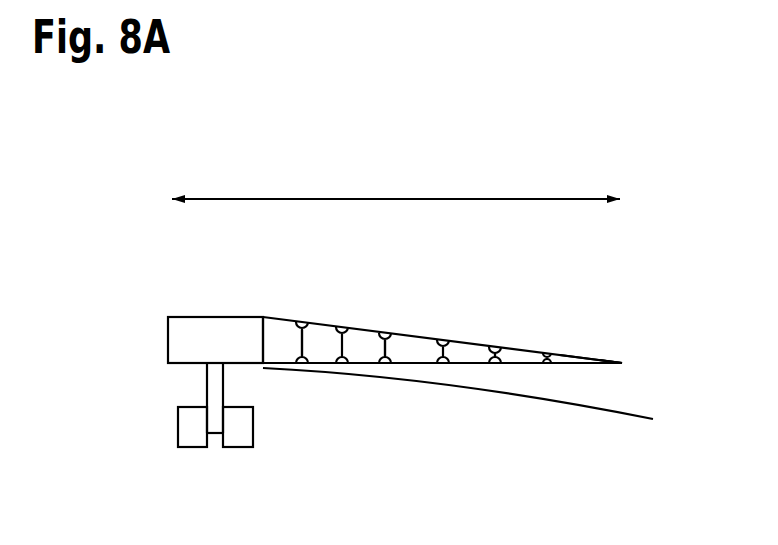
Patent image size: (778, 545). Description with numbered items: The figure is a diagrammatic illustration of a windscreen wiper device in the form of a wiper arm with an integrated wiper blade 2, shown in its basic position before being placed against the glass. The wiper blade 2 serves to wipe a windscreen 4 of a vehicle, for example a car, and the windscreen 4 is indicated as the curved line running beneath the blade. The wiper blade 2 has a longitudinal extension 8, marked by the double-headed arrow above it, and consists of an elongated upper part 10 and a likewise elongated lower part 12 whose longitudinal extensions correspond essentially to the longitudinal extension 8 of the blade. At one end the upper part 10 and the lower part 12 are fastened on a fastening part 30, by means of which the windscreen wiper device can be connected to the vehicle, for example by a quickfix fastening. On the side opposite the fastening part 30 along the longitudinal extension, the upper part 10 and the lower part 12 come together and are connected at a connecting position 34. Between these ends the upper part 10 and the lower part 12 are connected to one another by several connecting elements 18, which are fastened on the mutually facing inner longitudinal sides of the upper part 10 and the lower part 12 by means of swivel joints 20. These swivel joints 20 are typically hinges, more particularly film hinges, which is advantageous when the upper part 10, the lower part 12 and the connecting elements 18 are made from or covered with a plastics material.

The wiper blade 2 is at (632, 250).
The windscreen 4 is at (600, 420).
The longitudinal extension 8 is at (378, 199).
The upper part 10 is at (578, 355).
The lower part 12 is at (577, 364).
The connecting elements 18 is at (305, 343).
The swivel joints 20 is at (302, 320).
The fastening part 30 is at (180, 343).
The connecting position 34 is at (623, 360).